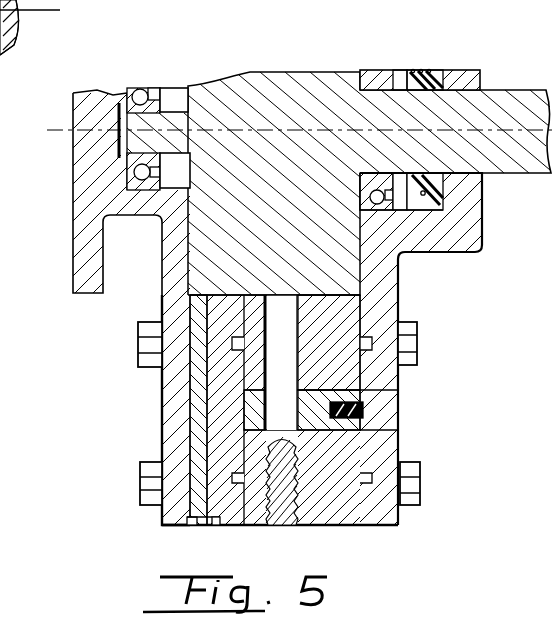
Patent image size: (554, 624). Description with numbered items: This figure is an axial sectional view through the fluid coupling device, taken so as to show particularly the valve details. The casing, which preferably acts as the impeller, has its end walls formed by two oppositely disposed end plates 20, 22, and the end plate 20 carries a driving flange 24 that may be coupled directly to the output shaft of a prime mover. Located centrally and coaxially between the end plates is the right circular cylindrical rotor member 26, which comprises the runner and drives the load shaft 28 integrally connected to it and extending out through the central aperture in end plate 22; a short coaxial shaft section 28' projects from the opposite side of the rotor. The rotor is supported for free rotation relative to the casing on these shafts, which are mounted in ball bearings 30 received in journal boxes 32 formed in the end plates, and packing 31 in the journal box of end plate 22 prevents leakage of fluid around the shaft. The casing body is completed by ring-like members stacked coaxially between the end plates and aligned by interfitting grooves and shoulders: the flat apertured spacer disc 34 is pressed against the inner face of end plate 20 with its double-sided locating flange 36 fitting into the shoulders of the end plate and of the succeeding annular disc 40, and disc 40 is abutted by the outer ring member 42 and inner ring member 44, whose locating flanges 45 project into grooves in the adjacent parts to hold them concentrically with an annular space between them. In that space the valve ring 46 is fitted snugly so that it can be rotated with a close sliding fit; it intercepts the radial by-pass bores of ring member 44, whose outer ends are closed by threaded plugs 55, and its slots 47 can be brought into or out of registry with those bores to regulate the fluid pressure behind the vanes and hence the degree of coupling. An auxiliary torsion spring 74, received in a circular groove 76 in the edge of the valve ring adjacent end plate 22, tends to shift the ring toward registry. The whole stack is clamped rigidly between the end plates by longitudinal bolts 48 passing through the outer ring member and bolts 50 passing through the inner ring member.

The end plate 20 is at (167, 308).
The end plate 22 is at (385, 291).
The driving flange 24 is at (84, 258).
The rotor member 26 is at (295, 85).
The load shaft 28 is at (515, 115).
The shaft section 28' is at (114, 120).
The ball bearings 30 is at (150, 96).
The packing 31 is at (437, 72).
The journal boxes 32 is at (177, 97).
The spacer disc 34 is at (197, 432).
The locating flange 36 is at (191, 520).
The annular disc 40 is at (220, 378).
The outer ring member 42 is at (351, 525).
The inner ring member 44 is at (343, 375).
The locating flanges 45 is at (238, 484).
The valve ring 46 is at (252, 408).
The slots 47 is at (366, 428).
The bolts 48 is at (413, 484).
The bolts 50 is at (408, 344).
The threaded plugs 55 is at (279, 526).
The auxiliary torsion spring 74 is at (366, 414).
The circular groove 76 is at (366, 405).